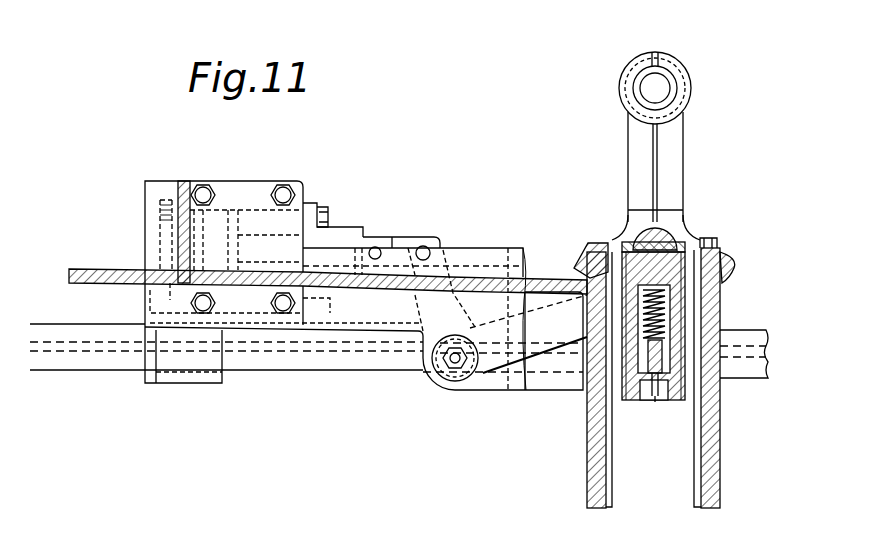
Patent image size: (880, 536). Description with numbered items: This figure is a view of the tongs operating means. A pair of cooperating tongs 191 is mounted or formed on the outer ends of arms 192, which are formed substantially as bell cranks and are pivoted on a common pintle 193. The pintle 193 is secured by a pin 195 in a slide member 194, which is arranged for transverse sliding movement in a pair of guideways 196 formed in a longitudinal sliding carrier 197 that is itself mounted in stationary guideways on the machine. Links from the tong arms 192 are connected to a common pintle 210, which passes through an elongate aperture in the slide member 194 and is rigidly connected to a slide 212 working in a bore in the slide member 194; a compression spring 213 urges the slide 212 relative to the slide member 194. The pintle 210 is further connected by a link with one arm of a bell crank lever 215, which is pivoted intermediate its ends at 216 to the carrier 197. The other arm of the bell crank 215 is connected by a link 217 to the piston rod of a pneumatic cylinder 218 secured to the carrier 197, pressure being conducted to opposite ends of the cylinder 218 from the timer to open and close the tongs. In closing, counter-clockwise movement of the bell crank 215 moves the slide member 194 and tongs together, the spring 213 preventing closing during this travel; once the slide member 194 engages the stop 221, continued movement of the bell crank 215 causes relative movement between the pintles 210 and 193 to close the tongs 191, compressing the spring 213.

The tongs 191 is at (658, 52).
The arms 192 is at (665, 138).
The pintle 193 is at (665, 232).
The slide member 194 is at (712, 388).
The pin 195 is at (630, 238).
The guideways 196 is at (694, 470).
The carrier 197 is at (122, 268).
The pintle 210 is at (658, 384).
The slide 212 is at (650, 398).
The compression spring 213 is at (722, 320).
The bell crank lever 215 is at (545, 338).
The pivot 216 is at (452, 362).
The link 217 is at (400, 242).
The pneumatic cylinder 218 is at (238, 188).
The stop 221 is at (705, 242).